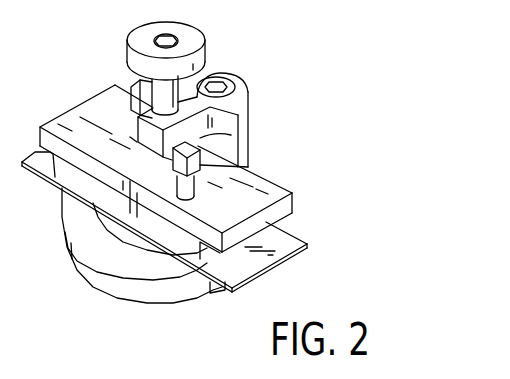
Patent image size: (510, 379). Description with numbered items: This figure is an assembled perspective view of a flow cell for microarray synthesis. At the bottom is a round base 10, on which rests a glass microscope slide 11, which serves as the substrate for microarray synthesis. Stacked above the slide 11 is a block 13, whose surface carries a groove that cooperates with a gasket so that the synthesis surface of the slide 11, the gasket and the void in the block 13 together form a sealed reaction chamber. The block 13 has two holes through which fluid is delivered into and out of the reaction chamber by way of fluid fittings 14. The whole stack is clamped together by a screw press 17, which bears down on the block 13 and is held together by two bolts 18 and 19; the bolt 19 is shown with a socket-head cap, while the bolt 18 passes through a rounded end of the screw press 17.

The base 10 is at (172, 290).
The glass microscope slide 11 is at (261, 263).
The block 13 is at (262, 207).
The fluid fittings 14 is at (252, 172).
The screw press 17 is at (250, 130).
The bolt 18 is at (235, 76).
The bolt 19 is at (187, 35).